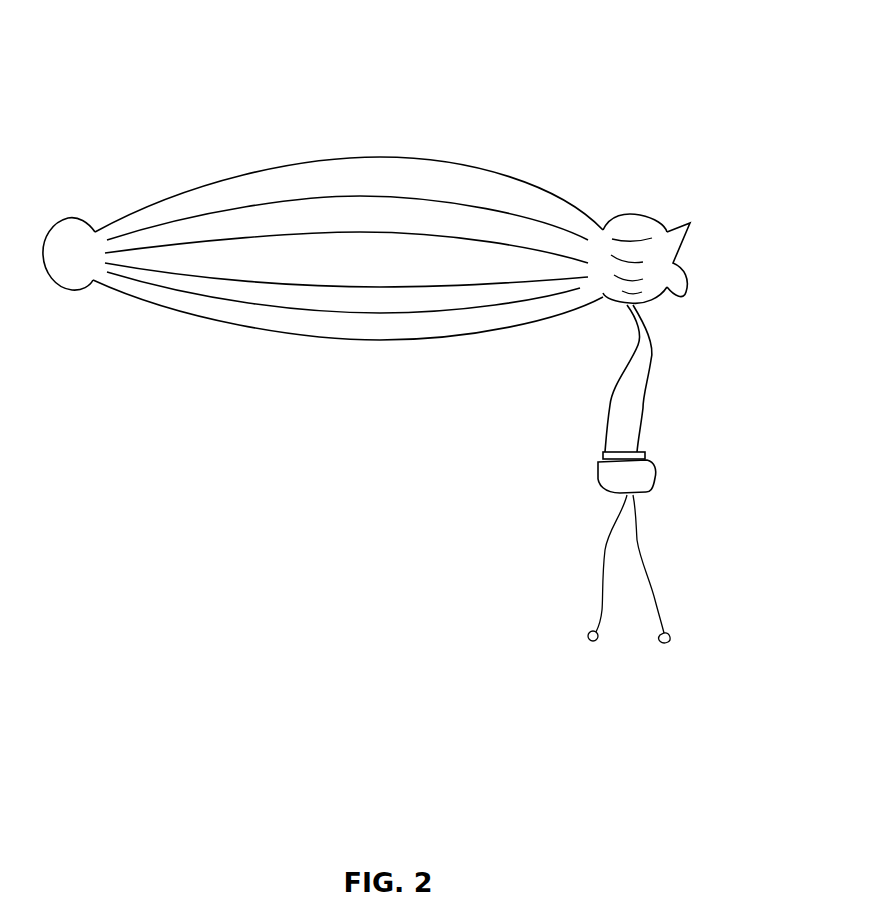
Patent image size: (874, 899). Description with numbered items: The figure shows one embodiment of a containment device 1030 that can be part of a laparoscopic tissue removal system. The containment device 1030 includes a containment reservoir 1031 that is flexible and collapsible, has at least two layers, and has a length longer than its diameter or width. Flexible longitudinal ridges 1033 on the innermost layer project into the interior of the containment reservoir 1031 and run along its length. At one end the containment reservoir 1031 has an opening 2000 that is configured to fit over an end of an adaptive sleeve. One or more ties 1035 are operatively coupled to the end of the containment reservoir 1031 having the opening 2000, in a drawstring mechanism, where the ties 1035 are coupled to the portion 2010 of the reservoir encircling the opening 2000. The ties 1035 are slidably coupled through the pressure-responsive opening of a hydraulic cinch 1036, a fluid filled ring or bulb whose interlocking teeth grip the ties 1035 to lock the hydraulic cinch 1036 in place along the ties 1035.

The containment device 1030 is at (113, 117).
The containment reservoir 1031 is at (423, 178).
The flexible longitudinal ridges 1033 is at (357, 283).
The portion of the containment reservoir encircling the opening 2010 is at (652, 210).
The opening 2000 is at (688, 263).
The ties 1035 is at (608, 397).
The hydraulic cinch 1036 is at (617, 463).